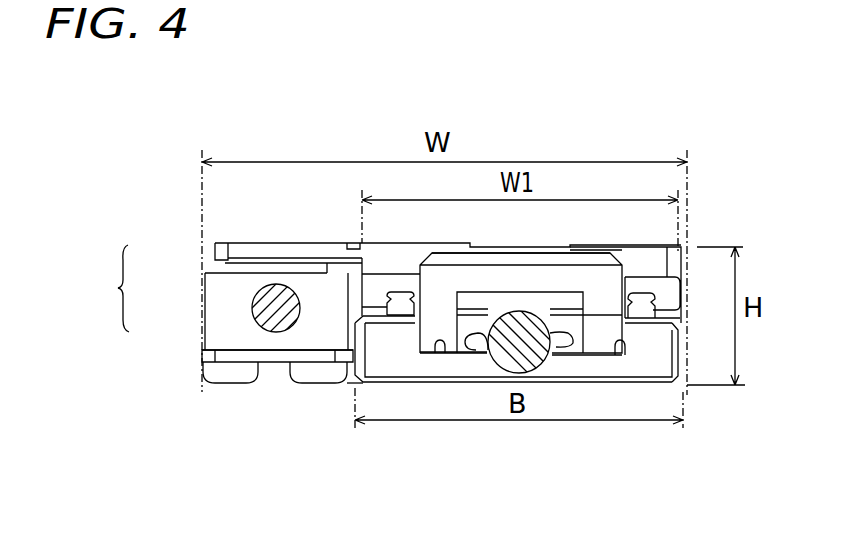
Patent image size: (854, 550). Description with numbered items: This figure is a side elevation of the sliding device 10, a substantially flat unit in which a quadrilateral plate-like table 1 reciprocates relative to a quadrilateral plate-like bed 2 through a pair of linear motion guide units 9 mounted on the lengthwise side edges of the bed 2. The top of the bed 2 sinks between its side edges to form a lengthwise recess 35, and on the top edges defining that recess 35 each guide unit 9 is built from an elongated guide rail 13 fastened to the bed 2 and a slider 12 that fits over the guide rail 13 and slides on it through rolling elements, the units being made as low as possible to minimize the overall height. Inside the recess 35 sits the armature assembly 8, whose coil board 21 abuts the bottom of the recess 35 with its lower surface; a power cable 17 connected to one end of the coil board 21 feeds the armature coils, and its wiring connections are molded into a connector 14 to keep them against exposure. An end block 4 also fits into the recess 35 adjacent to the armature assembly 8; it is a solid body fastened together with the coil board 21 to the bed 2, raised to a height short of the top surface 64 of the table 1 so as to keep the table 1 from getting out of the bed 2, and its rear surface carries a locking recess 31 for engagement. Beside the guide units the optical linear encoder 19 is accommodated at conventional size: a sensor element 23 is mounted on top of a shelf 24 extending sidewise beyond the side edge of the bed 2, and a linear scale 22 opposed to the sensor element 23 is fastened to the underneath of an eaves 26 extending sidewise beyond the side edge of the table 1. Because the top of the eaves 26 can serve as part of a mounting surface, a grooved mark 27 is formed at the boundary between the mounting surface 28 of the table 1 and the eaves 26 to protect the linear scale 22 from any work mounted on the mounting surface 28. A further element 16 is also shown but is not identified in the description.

The table 1 is at (652, 268).
The bed 2 is at (645, 367).
The end block 4 is at (603, 285).
The armature assembly 8 is at (562, 323).
The linear motion guide unit 9 is at (672, 290).
The sliding device 10 is at (341, 401).
The slider 12 is at (668, 302).
The guide rail 13 is at (643, 312).
The connector 14 is at (568, 332).
The cable 16 is at (277, 316).
The power cable 17 is at (532, 352).
The optical linear encoder 19 is at (221, 297).
The coil board 21 is at (427, 355).
The linear scale 22 is at (235, 263).
The sensor element 23 is at (225, 307).
The shelf 24 is at (243, 357).
The eaves 26 is at (252, 243).
The grooved mark 27 is at (353, 248).
The mounting surface 28 is at (447, 245).
The locking recess 31 is at (475, 302).
The lengthwise recess 35 is at (445, 356).
The top surface 64 is at (580, 245).